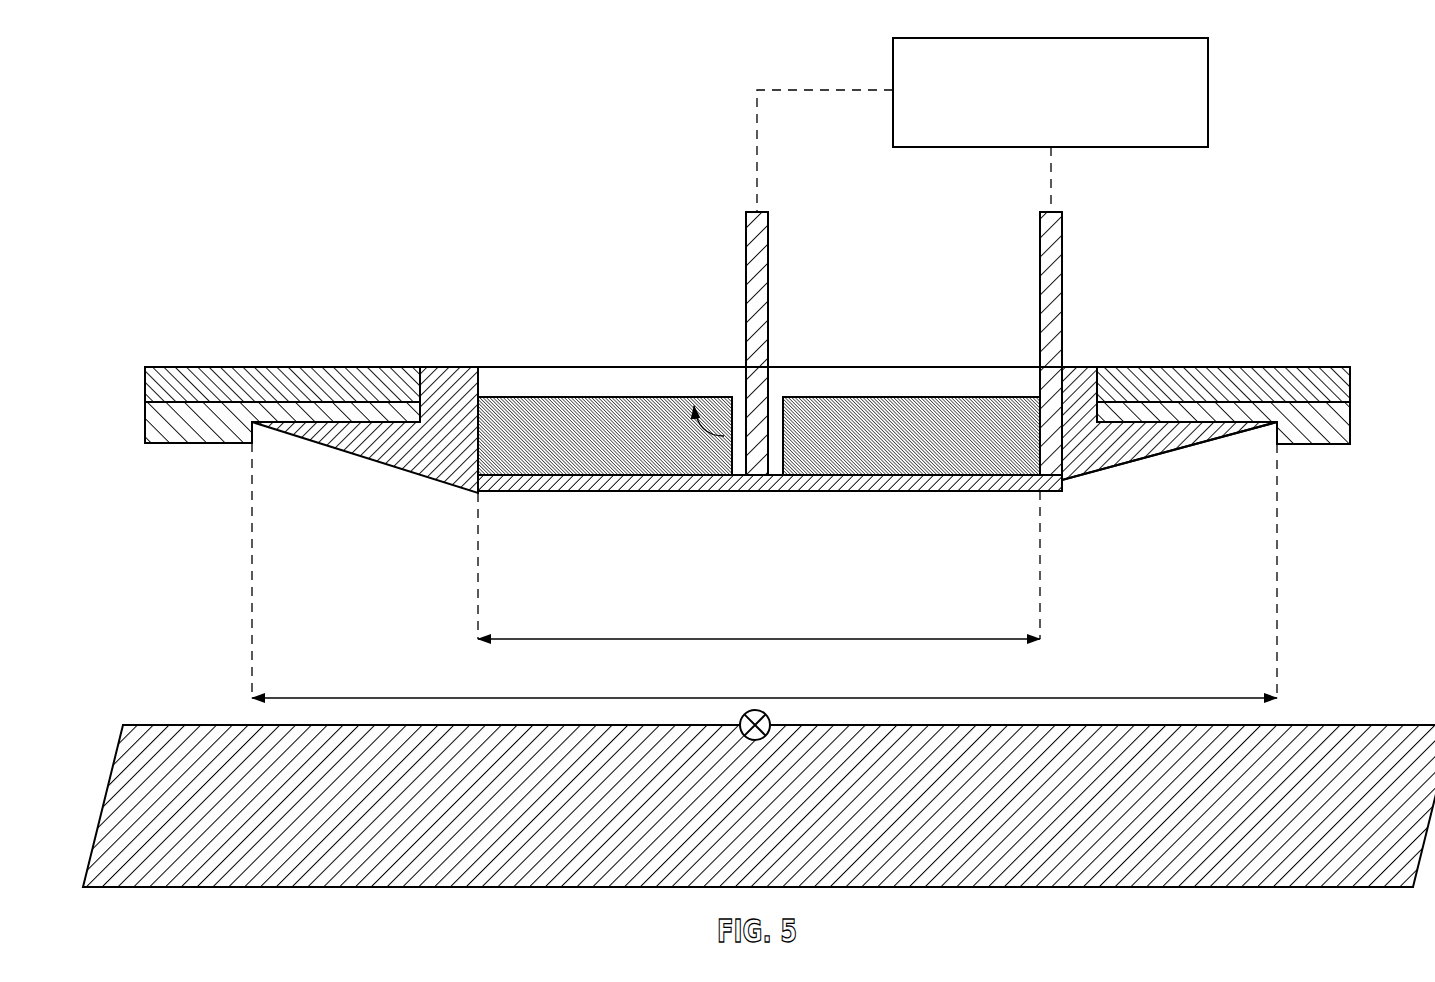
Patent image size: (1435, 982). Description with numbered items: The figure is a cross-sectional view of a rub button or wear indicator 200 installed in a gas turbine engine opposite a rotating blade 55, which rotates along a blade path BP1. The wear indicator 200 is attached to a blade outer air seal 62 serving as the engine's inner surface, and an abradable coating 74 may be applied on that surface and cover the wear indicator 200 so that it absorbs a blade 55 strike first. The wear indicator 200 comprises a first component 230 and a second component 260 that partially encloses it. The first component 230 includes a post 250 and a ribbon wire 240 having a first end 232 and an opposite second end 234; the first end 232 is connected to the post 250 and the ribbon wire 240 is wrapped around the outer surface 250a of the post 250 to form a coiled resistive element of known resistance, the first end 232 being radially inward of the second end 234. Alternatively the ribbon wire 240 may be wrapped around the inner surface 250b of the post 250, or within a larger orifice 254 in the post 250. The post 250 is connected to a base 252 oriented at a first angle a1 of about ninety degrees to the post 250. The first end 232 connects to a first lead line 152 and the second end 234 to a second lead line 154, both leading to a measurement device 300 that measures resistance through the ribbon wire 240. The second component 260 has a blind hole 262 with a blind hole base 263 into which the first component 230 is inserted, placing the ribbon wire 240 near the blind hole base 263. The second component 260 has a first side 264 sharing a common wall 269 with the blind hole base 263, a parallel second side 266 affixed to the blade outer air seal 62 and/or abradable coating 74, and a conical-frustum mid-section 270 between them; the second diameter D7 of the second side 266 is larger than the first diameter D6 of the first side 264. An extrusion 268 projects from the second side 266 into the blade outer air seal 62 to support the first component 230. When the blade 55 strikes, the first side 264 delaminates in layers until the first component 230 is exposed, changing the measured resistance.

The wear indicator 200 is at (262, 70).
The measurement device 300 is at (1208, 93).
The first lead line 152 is at (770, 250).
The second lead line 154 is at (1064, 250).
The base 252 is at (549, 366).
The orifice 254 is at (744, 406).
The post 250 is at (803, 366).
The ribbon wire 240 is at (860, 366).
The first component 230 is at (912, 366).
The extrusion 268 is at (1080, 382).
The blade outer air seal 62 is at (1172, 382).
The second side 266 is at (1232, 418).
The blind hole 262 is at (483, 429).
The blind hole base 263 is at (922, 475).
The abradable coating 74 is at (1342, 422).
The first side 264 is at (543, 492).
The inner surface of the post 250b is at (730, 442).
The outer surface of the post 250a is at (790, 462).
The first end 232 is at (759, 468).
The common wall 269 is at (823, 480).
The second end 234 is at (1064, 480).
The second component 260 is at (1125, 456).
The mid-section 270 is at (1167, 436).
The first angle a1 is at (728, 437).
The first diameter D6 is at (763, 639).
The second diameter D7 is at (763, 698).
The blade path BP1 is at (766, 736).
The blade 55 is at (772, 822).